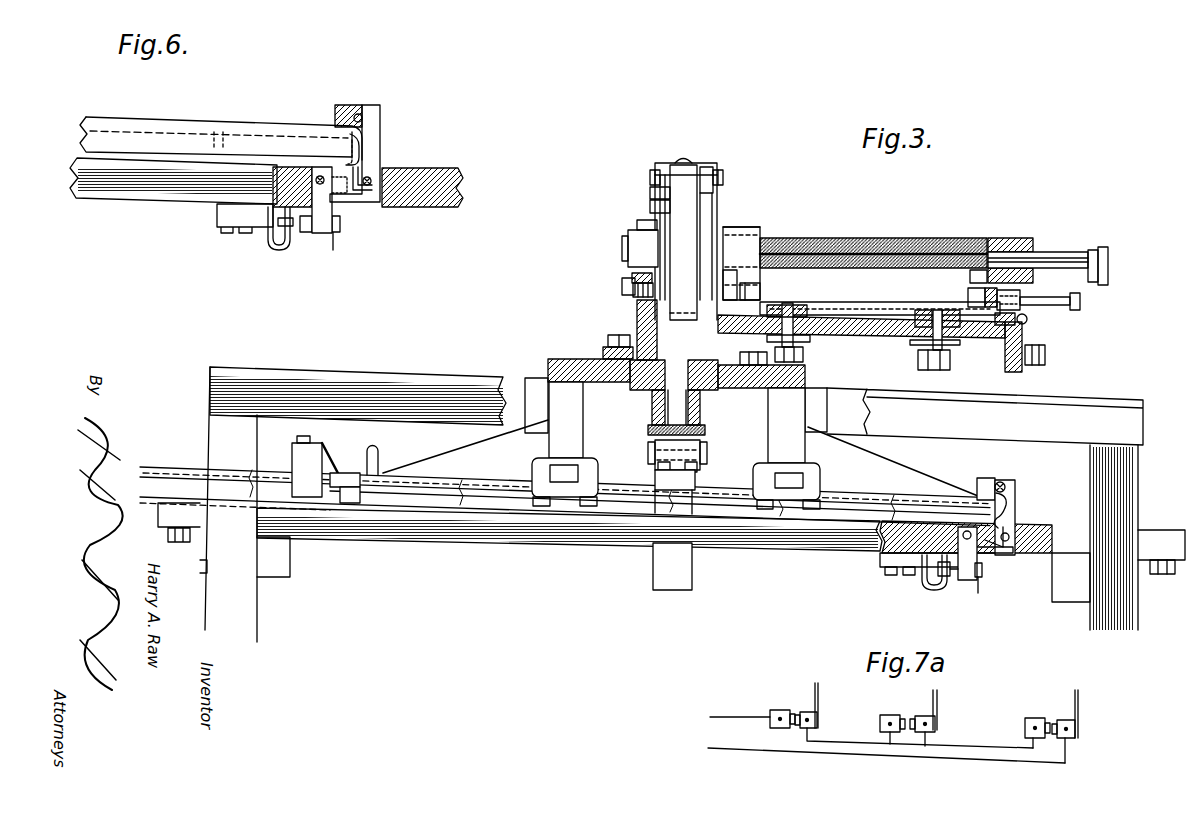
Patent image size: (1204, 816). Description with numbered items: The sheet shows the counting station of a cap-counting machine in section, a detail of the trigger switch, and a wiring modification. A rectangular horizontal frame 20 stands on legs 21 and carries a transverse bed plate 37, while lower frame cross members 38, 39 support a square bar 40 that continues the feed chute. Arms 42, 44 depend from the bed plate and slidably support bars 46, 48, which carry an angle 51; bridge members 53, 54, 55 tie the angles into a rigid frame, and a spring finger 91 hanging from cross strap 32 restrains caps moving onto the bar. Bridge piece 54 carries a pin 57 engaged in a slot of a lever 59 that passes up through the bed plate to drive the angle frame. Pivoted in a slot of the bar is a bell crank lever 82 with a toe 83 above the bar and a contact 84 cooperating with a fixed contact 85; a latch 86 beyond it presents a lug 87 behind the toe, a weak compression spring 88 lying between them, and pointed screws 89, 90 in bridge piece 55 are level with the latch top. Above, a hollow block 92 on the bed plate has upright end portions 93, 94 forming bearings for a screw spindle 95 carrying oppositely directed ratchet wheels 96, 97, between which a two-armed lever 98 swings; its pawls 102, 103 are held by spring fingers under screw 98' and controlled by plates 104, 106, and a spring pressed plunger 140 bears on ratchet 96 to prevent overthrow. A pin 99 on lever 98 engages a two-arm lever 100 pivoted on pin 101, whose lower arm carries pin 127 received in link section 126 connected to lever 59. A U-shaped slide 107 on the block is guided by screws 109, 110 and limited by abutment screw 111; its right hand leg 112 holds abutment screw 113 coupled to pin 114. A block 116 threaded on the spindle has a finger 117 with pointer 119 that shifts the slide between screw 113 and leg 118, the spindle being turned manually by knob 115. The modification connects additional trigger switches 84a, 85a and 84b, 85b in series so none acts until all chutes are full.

In FIG. 3, the horizontal frame 20 is at (337, 360).
In FIG. 3, the legs 21 is at (1133, 492).
In FIG. 3, the cross strap 32 is at (292, 450).
In FIG. 3, the bed plate 37 is at (570, 341).
In FIG. 3, the lower frame cross member 38 is at (204, 547).
In FIG. 3, the lower frame cross member 39 is at (1143, 594).
In FIG. 6, the square bar 40 is at (167, 182).
In FIG. 3, the square bar 40 is at (557, 523).
In FIG. 3, the arm 42 is at (549, 444).
In FIG. 3, the arm 44 is at (805, 453).
In FIG. 3, the bar 46 is at (590, 472).
In FIG. 3, the bar 48 is at (803, 478).
In FIG. 6, the angle 51 is at (171, 126).
In FIG. 3, the angle 51 is at (433, 478).
In FIG. 3, the bridge member 53 is at (380, 456).
In FIG. 3, the bridge piece 54 is at (690, 478).
In FIG. 6, the bridge piece 55 is at (335, 116).
In FIG. 3, the bridge piece 55 is at (993, 478).
In FIG. 3, the pin 57 is at (700, 450).
In FIG. 3, the lever 59 is at (660, 400).
In FIG. 6, the bell crank lever 82 is at (322, 208).
In FIG. 3, the bell crank lever 82 is at (975, 562).
In FIG. 6, the toe 83 is at (364, 167).
In FIG. 3, the toe 83 is at (1010, 528).
In FIG. 3, the contact 84 is at (958, 581).
In FIG. 7a, the contact 84 is at (1064, 720).
In FIG. 7a, the trigger switch contact 84a is at (923, 716).
In FIG. 7a, the trigger switch contact 84b is at (802, 730).
In FIG. 3, the fixed contact 85 is at (935, 588).
In FIG. 7a, the fixed contact 85 is at (1033, 718).
In FIG. 7a, the trigger switch contact 85a is at (886, 715).
In FIG. 7a, the trigger switch contact 85b is at (785, 700).
In FIG. 6, the latch 86 is at (381, 118).
In FIG. 3, the latch 86 is at (1015, 486).
In FIG. 6, the lug 87 is at (364, 141).
In FIG. 3, the lug 87 is at (1006, 504).
In FIG. 3, the compression spring 88 is at (1010, 556).
In FIG. 6, the screw 89 is at (362, 114).
In FIG. 3, the screw 90 is at (1003, 483).
In FIG. 3, the spring finger 91 is at (345, 464).
In FIG. 3, the hollow block 92 is at (1023, 335).
In FIG. 3, the upright end portion 93 is at (628, 258).
In FIG. 3, the upright end portion 94 is at (1030, 239).
In FIG. 3, the screw spindle 95 is at (867, 242).
In FIG. 3, the ratchet wheel 96 is at (655, 228).
In FIG. 3, the ratchet wheel 97 is at (720, 210).
In FIG. 3, the two-armed lever 98 is at (624, 243).
In FIG. 3, the screw 98' is at (686, 150).
In FIG. 3, the pin 99 is at (640, 311).
In FIG. 3, the two-arm lever 100 is at (637, 331).
In FIG. 3, the pin 101 is at (730, 388).
In FIG. 3, the pawl 102 is at (650, 190).
In FIG. 3, the pawl 103 is at (715, 192).
In FIG. 3, the vertical plate 104 is at (718, 224).
In FIG. 3, the control plate 106 is at (655, 210).
In FIG. 3, the slide 107 is at (852, 295).
In FIG. 3, the screw 109 is at (771, 335).
In FIG. 3, the screw 110 is at (915, 341).
In FIG. 3, the abutment screw 111 is at (1028, 320).
In FIG. 3, the right hand leg 112 is at (982, 253).
In FIG. 3, the abutment screw 113 is at (968, 297).
In FIG. 3, the pin 114 is at (1048, 297).
In FIG. 3, the knob 115 is at (1104, 250).
In FIG. 3, the block 116 is at (753, 230).
In FIG. 3, the finger 117 is at (750, 281).
In FIG. 3, the leg 118 is at (730, 277).
In FIG. 3, the pointer 119 is at (752, 296).
In FIG. 3, the link section 126 is at (655, 448).
In FIG. 3, the pin 127 is at (705, 422).
In FIG. 3, the spring pressed plunger 140 is at (677, 282).